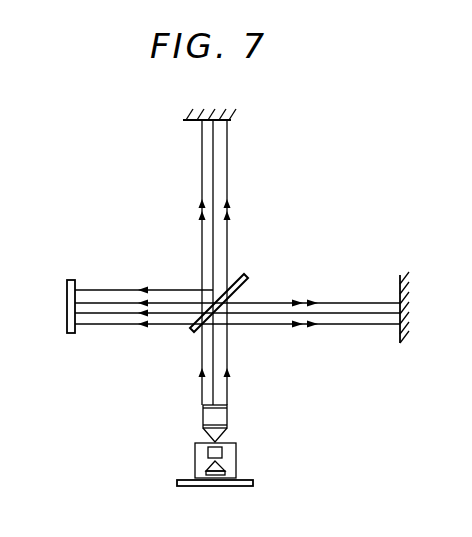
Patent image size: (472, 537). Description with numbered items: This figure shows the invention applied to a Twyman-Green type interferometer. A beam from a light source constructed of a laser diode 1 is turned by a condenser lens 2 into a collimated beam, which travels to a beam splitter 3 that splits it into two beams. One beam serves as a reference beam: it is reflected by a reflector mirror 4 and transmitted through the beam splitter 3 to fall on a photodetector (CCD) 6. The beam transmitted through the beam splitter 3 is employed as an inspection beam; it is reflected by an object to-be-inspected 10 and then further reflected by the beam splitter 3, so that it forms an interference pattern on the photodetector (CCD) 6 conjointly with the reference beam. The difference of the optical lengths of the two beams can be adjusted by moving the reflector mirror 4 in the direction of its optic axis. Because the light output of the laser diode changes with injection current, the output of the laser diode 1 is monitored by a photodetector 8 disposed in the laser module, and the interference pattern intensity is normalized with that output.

The laser diode 1 is at (222, 452).
The condenser lens 2 is at (228, 416).
The beam splitter 3 is at (244, 276).
The reflector mirror 4 is at (399, 331).
The photodetector (CCD) 6 is at (67, 293).
The photodetector 8 is at (236, 470).
The object to-be-inspected 10 is at (229, 121).